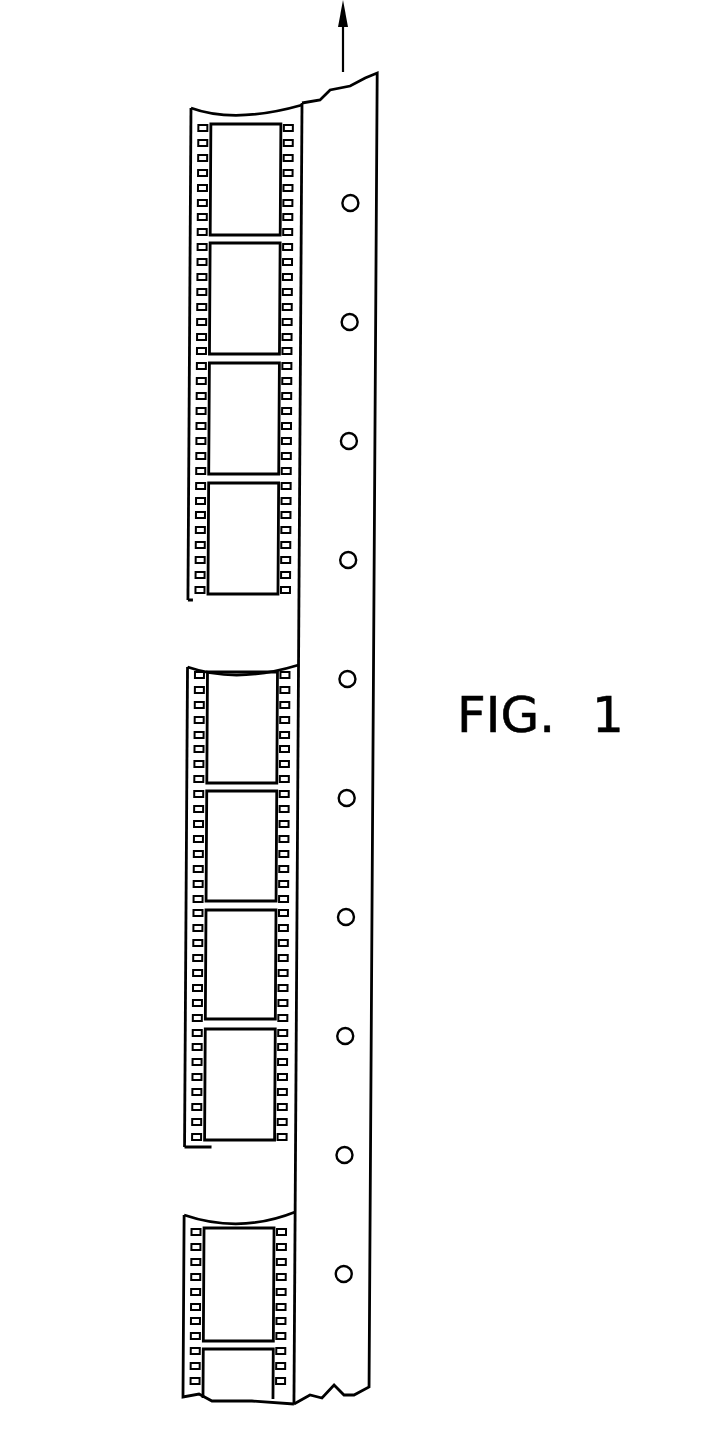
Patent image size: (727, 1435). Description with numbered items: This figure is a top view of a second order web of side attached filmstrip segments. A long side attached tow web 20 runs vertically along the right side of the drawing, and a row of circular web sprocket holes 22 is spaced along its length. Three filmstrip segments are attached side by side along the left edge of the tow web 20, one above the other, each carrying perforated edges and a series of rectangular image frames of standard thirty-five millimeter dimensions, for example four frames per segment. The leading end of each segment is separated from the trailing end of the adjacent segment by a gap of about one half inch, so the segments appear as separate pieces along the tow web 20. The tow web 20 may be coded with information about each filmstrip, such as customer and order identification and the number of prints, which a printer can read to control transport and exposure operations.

The side attached tow web 20 is at (365, 377).
The web sprocket holes 22 is at (350, 313).